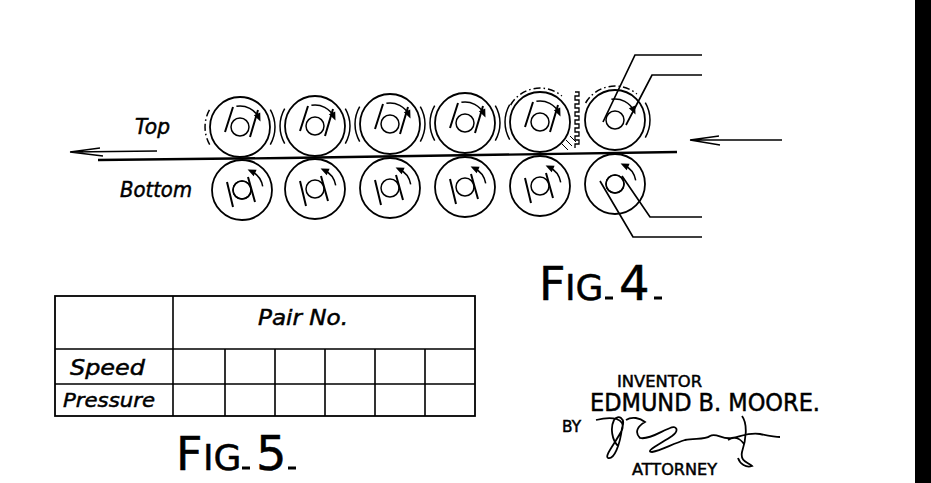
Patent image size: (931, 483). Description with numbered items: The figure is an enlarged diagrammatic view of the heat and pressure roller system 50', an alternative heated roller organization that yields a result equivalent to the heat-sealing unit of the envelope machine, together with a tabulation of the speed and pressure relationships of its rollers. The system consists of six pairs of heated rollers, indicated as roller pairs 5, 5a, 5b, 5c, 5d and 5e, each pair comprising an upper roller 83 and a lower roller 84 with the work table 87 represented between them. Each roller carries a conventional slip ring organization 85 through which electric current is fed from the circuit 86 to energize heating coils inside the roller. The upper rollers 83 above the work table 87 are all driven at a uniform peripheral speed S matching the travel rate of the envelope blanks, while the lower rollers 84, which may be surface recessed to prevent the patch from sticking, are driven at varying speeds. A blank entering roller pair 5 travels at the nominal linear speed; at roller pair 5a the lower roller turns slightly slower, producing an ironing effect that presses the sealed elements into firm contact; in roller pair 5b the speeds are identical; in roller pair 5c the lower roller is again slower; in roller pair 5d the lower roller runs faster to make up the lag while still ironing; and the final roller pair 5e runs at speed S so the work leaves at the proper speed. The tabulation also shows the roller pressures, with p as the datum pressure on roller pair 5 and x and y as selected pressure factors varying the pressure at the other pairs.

In FIG. 4, the heat and pressure roller system 50' is at (426, 152).
In FIG. 4, the roller pair 5 is at (667, 145).
In FIG. 5, the roller pair 5 is at (449, 369).
In FIG. 4, the roller pair 5a is at (542, 136).
In FIG. 5, the roller pair 5a is at (398, 369).
In FIG. 4, the roller pair 5b is at (465, 136).
In FIG. 5, the roller pair 5b is at (351, 369).
In FIG. 4, the roller pair 5c is at (390, 137).
In FIG. 5, the roller pair 5c is at (298, 369).
In FIG. 4, the roller pair 5d is at (315, 139).
In FIG. 5, the roller pair 5d is at (249, 368).
In FIG. 4, the roller pair 5e is at (222, 150).
In FIG. 5, the roller pair 5e is at (197, 369).
In FIG. 4, the upper roller 83 is at (213, 117).
In FIG. 4, the lower roller 84 is at (227, 218).
In FIG. 4, the slip ring organization 85 is at (255, 196).
In FIG. 4, the circuit 86 is at (692, 236).
In FIG. 4, the work table 87 is at (677, 152).